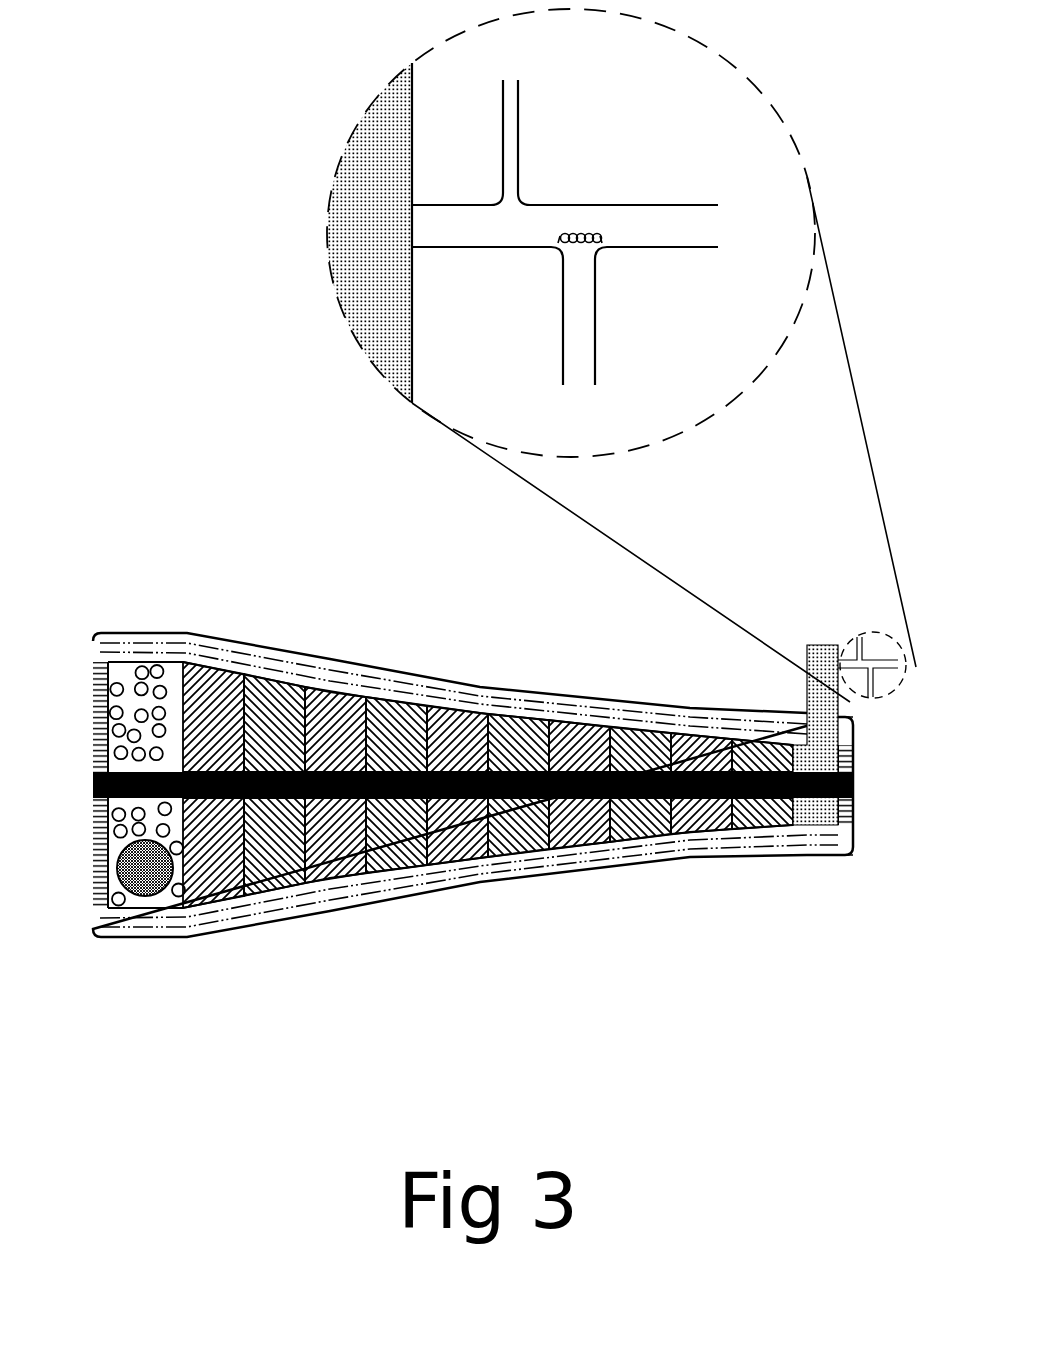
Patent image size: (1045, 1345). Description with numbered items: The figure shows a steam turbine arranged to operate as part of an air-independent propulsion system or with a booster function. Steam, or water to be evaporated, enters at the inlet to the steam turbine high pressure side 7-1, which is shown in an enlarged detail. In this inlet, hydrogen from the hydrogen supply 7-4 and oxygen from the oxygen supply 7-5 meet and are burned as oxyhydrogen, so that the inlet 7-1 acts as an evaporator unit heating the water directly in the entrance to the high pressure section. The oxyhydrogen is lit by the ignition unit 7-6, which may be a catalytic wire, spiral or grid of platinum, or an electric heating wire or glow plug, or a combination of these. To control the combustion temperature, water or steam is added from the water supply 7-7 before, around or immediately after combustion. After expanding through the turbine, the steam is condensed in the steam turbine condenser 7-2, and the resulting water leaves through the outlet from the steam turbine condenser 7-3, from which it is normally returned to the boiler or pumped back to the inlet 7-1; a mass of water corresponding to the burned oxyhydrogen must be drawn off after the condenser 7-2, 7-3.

The inlet to steam turbine high pressure side 7-1 is at (684, 501).
The steam turbine condenser 7-2 is at (441, 755).
The outlet from steam turbine condenser 7-3 is at (124, 927).
The hydrogen supply 7-4 is at (526, 347).
The oxygen supply 7-5 is at (677, 199).
The ignition unit 7-6 is at (633, 190).
The water supply 7-7 is at (506, 113).